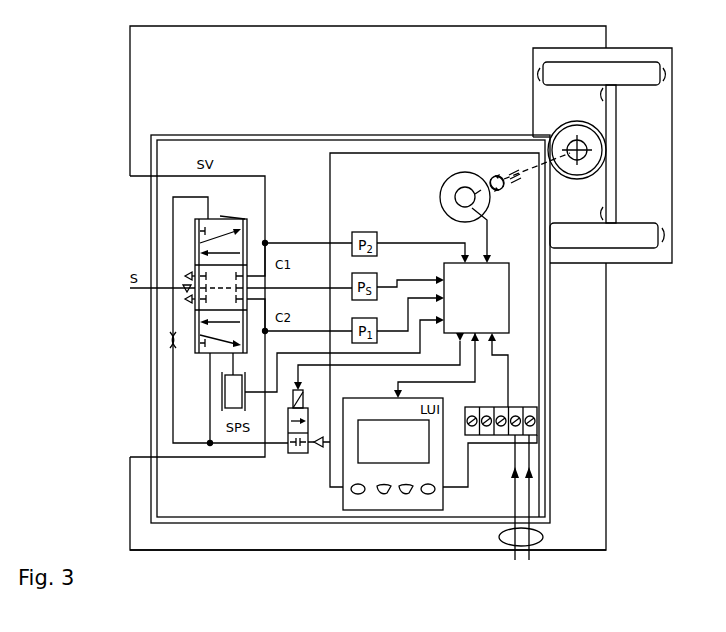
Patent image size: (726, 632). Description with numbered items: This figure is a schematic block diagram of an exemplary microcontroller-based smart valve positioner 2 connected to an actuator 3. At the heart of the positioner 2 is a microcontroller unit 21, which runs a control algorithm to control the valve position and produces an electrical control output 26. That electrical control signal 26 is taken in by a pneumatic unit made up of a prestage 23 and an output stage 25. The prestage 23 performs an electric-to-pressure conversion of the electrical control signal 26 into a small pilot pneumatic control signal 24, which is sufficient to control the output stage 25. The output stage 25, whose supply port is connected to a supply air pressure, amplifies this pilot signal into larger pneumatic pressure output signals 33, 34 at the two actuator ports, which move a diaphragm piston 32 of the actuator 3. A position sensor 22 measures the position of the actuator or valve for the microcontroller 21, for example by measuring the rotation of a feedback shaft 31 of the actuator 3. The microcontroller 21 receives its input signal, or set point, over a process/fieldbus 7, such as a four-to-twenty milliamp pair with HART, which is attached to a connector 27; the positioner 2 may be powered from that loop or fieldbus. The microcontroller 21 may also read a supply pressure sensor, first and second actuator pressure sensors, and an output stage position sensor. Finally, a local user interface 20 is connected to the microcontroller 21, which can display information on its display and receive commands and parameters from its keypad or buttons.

The positioner 2 is at (350, 313).
The actuator 3 is at (617, 46).
The process/fieldbus 7 is at (521, 524).
The local user interface 20 is at (337, 497).
The microcontroller unit 21 is at (497, 261).
The position sensor 22 is at (440, 196).
The prestage 23 is at (283, 455).
The pilot pneumatic control signal 24 is at (173, 382).
The output stage 25 is at (197, 322).
The electrical control output 26 is at (387, 366).
The connector 27 is at (538, 421).
The feedback shaft 31 is at (587, 118).
The diaphragm piston 32 is at (664, 62).
The pneumatic pressure output signal 33 is at (385, 27).
The pneumatic pressure output signal 34 is at (418, 550).